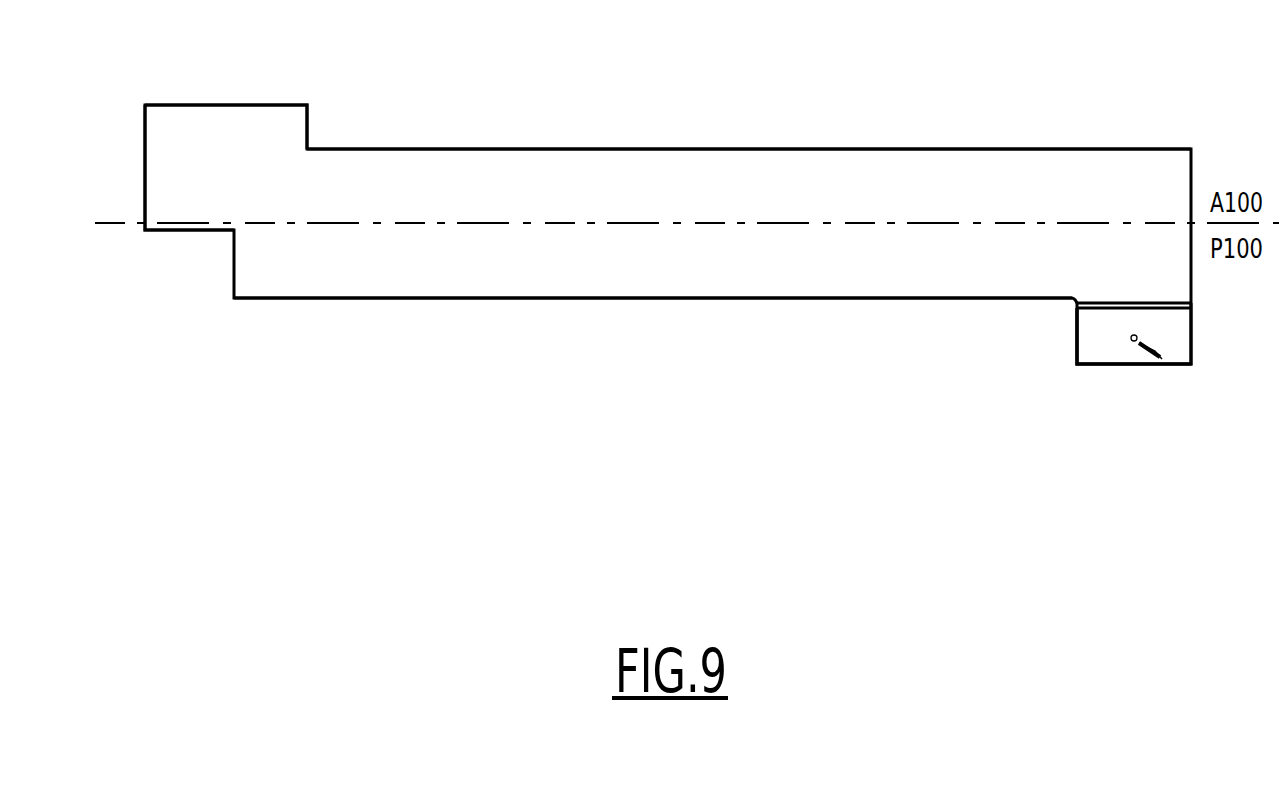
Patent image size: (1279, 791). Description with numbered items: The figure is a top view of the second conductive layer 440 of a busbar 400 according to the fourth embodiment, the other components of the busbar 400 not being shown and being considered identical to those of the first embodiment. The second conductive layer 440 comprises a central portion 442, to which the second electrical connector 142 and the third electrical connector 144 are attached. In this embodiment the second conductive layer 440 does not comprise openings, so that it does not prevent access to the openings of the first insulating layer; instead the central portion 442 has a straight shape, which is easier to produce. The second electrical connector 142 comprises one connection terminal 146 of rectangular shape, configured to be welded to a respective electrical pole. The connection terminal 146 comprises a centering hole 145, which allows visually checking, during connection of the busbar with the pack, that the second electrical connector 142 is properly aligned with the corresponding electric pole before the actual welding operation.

The busbar 400 is at (1052, 62).
The third electrical connector 144 is at (158, 176).
The central portion 442 is at (635, 160).
The second conductive layer 440 is at (834, 168).
The second electrical connector 142 is at (1025, 417).
The connection terminal 146 is at (1097, 345).
The centering hole 145 is at (1160, 357).